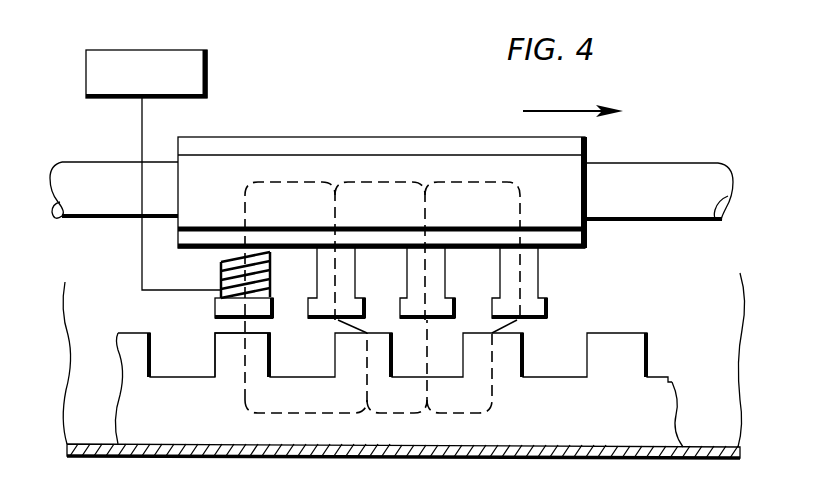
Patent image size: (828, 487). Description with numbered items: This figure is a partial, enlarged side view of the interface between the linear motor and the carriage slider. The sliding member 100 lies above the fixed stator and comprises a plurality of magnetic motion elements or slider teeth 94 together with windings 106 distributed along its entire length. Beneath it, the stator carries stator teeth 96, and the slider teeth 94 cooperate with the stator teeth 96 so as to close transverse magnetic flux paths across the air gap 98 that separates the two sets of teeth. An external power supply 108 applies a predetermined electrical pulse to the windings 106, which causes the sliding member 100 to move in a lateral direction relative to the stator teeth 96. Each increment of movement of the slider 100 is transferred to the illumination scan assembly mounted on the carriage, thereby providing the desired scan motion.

The slider teeth 94 is at (558, 274).
The stator teeth 96 is at (718, 334).
The air gap 98 is at (265, 325).
The sliding member 100 is at (318, 160).
The windings 106 is at (215, 300).
The external power supply 108 is at (203, 50).